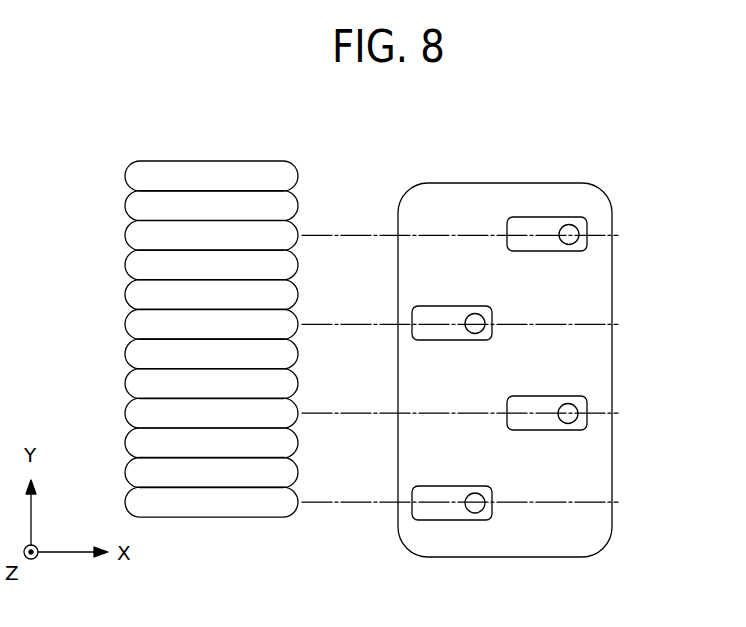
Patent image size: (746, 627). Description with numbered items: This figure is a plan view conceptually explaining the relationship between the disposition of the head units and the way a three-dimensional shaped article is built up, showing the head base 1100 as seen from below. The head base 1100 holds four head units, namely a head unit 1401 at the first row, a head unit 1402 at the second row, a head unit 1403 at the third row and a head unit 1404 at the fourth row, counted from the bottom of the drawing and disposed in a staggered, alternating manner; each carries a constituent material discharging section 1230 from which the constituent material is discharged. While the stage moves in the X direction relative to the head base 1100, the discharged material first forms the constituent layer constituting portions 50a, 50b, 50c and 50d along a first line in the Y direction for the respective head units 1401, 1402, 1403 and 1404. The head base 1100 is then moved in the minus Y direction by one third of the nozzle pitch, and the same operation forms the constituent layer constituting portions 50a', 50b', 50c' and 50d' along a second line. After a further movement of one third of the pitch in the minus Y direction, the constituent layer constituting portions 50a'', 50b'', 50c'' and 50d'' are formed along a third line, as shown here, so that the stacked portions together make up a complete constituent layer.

The constituent layer constituting portion 50a is at (183, 441).
The constituent layer constituting portion 50a' is at (180, 471).
The constituent layer constituting portion 50a'' is at (252, 518).
The constituent layer constituting portion 50b is at (183, 352).
The constituent layer constituting portion 50b' is at (180, 382).
The constituent layer constituting portion 50b'' is at (252, 429).
The constituent layer constituting portion 50c is at (183, 263).
The constituent layer constituting portion 50c' is at (180, 293).
The constituent layer constituting portion 50c'' is at (252, 340).
The constituent layer constituting portion 50d is at (183, 174).
The constituent layer constituting portion 50d' is at (180, 204).
The constituent layer constituting portion 50d'' is at (252, 251).
The head base 1100 is at (602, 195).
The constituent material discharging section 1230 is at (570, 225).
The head unit 1401 is at (492, 515).
The head unit 1402 is at (587, 423).
The head unit 1403 is at (492, 333).
The head unit 1404 is at (587, 245).